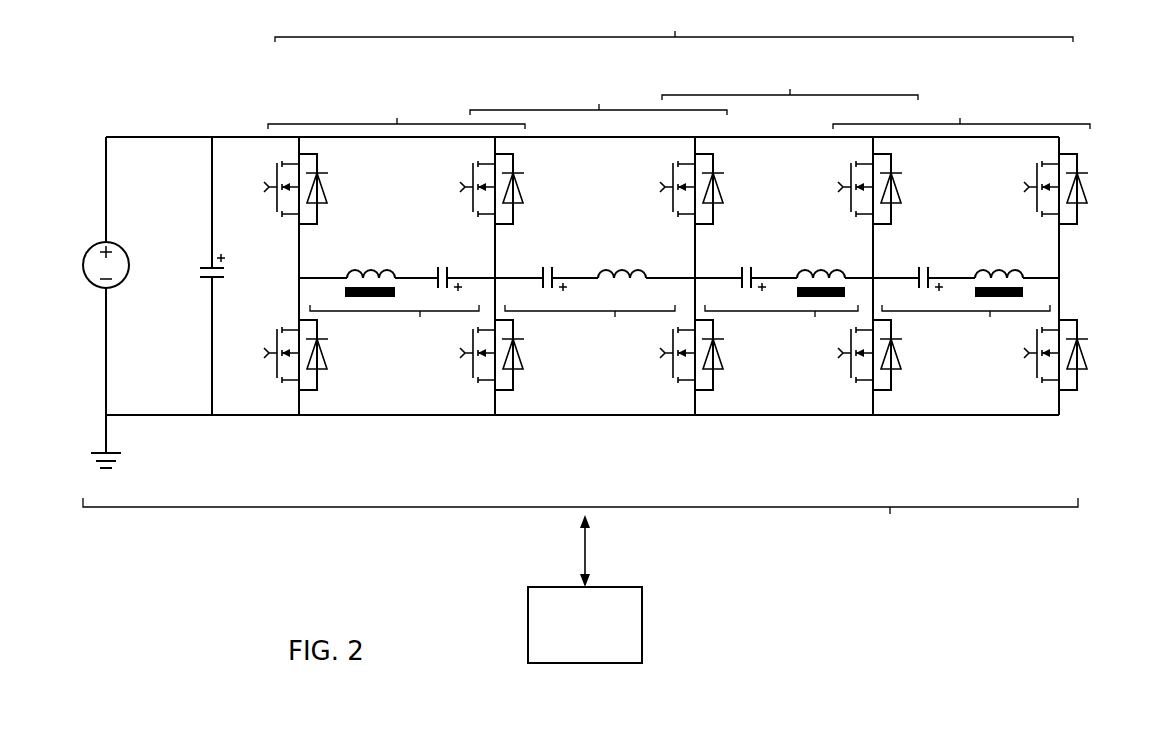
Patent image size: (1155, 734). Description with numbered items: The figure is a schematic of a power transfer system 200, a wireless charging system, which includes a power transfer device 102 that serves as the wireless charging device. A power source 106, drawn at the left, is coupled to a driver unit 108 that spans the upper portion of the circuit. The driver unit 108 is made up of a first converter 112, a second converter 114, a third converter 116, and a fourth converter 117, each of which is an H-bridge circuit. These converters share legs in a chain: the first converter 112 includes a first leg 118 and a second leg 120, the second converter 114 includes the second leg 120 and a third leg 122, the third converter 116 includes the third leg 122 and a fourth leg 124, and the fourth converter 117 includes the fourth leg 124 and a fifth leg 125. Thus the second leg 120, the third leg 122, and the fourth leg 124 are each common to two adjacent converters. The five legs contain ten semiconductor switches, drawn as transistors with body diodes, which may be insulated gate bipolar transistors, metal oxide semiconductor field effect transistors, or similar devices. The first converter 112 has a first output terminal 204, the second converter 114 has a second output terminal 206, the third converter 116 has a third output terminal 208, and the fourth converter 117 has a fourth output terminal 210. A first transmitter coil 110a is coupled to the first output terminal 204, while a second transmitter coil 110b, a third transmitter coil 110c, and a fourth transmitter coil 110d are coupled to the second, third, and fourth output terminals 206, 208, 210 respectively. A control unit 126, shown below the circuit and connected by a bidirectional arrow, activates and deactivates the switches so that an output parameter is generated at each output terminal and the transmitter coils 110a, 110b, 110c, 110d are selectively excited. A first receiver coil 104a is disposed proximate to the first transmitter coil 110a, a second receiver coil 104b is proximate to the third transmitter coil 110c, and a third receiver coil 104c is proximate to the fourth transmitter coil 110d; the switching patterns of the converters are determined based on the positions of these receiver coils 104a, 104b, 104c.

The power transfer device 102 is at (580, 520).
The first receiver coil 104a is at (375, 297).
The second receiver coil 104b is at (846, 290).
The third receiver coil 104c is at (1023, 292).
The power source 106 is at (88, 250).
The driver unit 108 is at (674, 25).
The first transmitter coil 110a is at (368, 268).
The second transmitter coil 110b is at (622, 268).
The third transmitter coil 110c is at (821, 268).
The fourth transmitter coil 110d is at (999, 268).
The first converter 112 is at (396, 112).
The second converter 114 is at (598, 97).
The third converter 116 is at (790, 82).
The fourth converter 117 is at (961, 111).
The first leg 118 is at (299, 407).
The second leg 120 is at (495, 407).
The third leg 122 is at (695, 407).
The fourth leg 124 is at (873, 407).
The fifth leg 125 is at (1059, 407).
The control unit 126 is at (642, 625).
The power transfer system 200 is at (1015, 637).
The first output terminal 204 is at (394, 322).
The second output terminal 206 is at (590, 322).
The third output terminal 208 is at (781, 322).
The fourth output terminal 210 is at (966, 322).